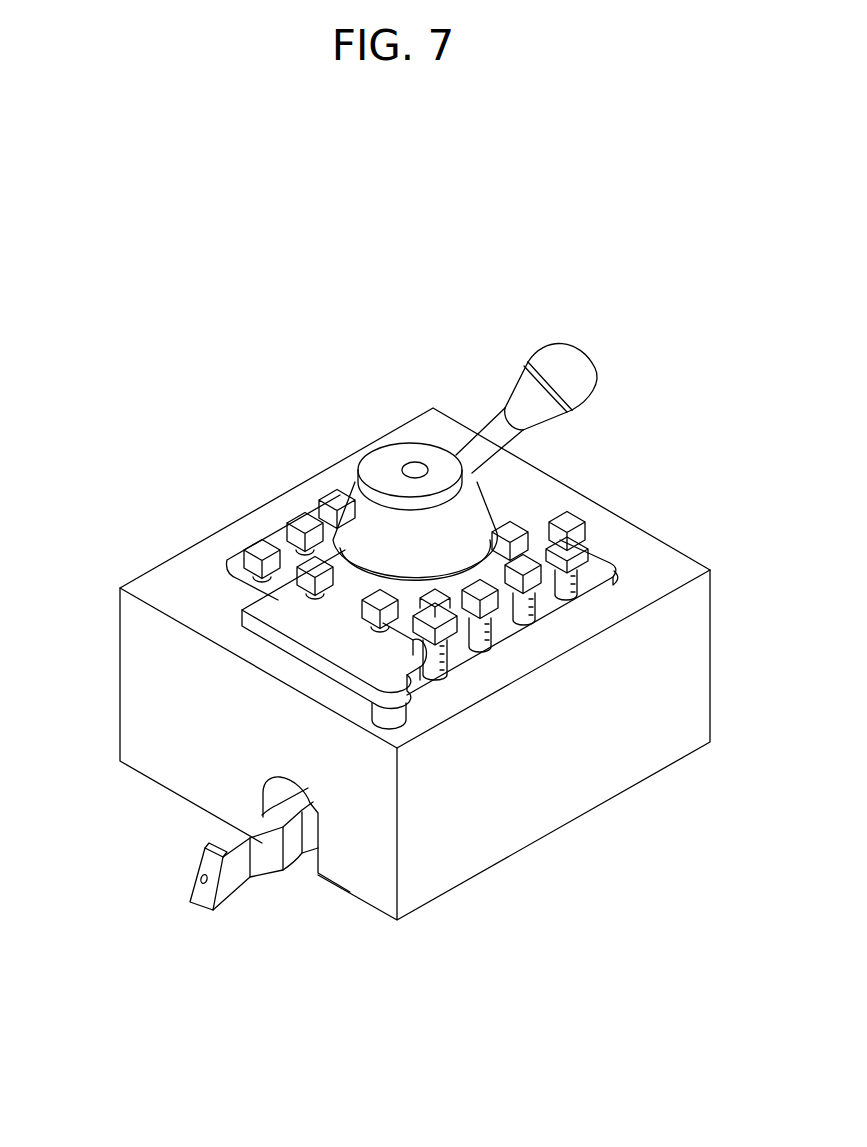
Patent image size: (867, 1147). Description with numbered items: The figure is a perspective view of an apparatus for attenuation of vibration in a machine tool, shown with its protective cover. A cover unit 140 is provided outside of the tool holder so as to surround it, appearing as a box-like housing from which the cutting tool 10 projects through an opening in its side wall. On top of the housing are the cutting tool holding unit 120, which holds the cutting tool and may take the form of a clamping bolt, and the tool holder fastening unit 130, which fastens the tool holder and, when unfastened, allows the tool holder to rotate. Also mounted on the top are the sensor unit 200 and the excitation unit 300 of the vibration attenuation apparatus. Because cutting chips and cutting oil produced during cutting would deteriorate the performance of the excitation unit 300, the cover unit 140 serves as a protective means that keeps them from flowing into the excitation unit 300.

The cutting tool 10 is at (270, 866).
The cutting tool holding unit 120 is at (636, 561).
The tool holder fastening unit 130 is at (562, 356).
The cover unit 140 is at (540, 792).
The sensor unit 200 is at (570, 518).
The excitation unit 300 is at (302, 634).